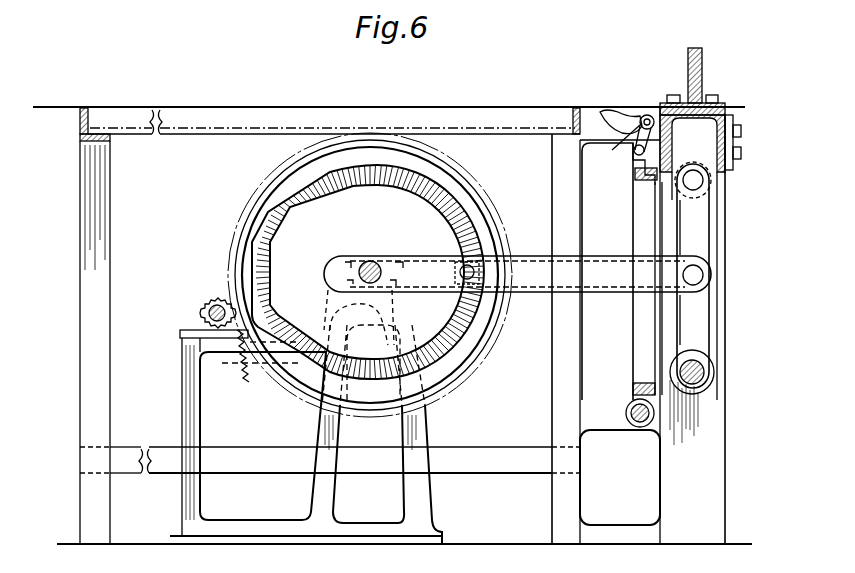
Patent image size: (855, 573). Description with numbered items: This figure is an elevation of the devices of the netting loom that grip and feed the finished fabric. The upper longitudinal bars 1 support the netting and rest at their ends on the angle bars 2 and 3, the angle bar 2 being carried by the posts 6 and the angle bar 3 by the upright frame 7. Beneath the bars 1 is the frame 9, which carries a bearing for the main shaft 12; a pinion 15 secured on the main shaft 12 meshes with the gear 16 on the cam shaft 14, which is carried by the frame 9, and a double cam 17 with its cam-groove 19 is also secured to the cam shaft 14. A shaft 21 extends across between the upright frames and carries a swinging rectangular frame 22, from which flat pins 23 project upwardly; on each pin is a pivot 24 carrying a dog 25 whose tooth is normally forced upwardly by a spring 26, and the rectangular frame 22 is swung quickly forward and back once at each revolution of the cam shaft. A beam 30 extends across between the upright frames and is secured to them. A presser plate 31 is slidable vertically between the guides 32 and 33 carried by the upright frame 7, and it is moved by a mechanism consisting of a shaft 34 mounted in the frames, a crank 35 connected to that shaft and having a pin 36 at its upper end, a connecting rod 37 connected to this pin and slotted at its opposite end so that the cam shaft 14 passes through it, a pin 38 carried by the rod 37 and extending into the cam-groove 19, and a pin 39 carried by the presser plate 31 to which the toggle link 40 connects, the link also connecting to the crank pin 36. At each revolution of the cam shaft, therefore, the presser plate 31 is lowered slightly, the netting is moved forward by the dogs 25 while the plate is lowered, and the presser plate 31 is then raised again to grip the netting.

The upper longitudinal bars 1 is at (237, 123).
The angle bar 2 is at (78, 138).
The angle bar 3 is at (576, 142).
The posts 6 is at (98, 312).
The upright frame 7 is at (718, 272).
The frame 9 is at (181, 381).
The main shaft 12 is at (212, 310).
The cam shaft 14 is at (375, 262).
The pinion 15 is at (200, 326).
The gear 16 is at (258, 364).
The double cam 17 is at (480, 222).
The cam-groove 19 is at (438, 342).
The shaft 21 is at (639, 424).
The swinging rectangular frame 22 is at (636, 238).
The flat pins 23 is at (642, 164).
The pivot 24 is at (633, 125).
The dog 25 is at (612, 110).
The spring 26 is at (623, 143).
The beam 30 is at (702, 74).
The presser plate 31 is at (692, 247).
The guide 32 is at (657, 114).
The guide 33 is at (732, 116).
The shaft 34 is at (706, 372).
The crank 35 is at (693, 320).
The pin 36 is at (700, 271).
The connecting rod 37 is at (608, 282).
The pin 38 is at (474, 272).
The pin 39 is at (696, 177).
The toggle link 40 is at (693, 227).